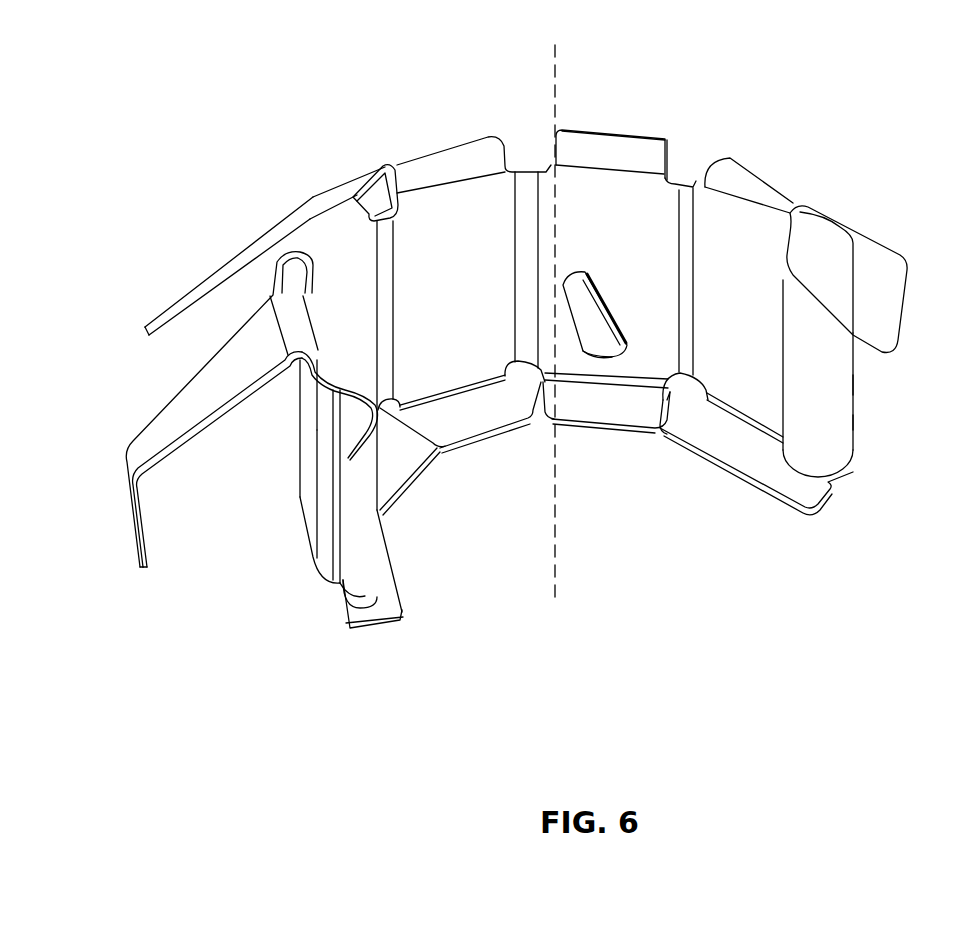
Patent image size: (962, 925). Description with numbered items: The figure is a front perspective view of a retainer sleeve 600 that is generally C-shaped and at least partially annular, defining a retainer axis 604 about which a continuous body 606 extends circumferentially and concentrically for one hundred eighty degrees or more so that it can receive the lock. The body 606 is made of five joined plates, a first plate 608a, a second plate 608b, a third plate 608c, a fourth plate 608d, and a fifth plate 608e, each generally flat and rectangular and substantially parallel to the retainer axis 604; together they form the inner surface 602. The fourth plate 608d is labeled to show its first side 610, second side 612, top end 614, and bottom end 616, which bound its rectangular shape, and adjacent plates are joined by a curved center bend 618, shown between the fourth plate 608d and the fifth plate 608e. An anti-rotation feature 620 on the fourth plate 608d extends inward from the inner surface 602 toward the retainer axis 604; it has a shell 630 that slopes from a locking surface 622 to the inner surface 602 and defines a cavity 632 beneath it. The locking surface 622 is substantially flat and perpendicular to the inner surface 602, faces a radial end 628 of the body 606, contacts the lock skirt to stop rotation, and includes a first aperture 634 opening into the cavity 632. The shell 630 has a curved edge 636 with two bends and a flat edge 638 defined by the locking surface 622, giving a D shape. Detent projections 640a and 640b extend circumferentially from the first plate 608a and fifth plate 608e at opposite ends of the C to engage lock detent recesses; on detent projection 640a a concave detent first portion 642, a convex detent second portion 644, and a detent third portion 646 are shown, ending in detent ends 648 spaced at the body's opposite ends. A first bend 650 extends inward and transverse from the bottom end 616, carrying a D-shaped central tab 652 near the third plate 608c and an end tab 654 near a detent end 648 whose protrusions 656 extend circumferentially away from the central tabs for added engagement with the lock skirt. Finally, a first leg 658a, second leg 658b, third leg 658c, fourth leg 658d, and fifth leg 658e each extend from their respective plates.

The retainer sleeve 600 is at (197, 50).
The inner surface 602 is at (385, 167).
The retainer axis 604 is at (552, 60).
The body 606 is at (750, 370).
The first plate 608a is at (307, 470).
The second plate 608b is at (357, 270).
The third plate 608c is at (437, 220).
The fourth plate 608d is at (587, 187).
The fifth plate 608e is at (763, 240).
The first side 610 is at (540, 273).
The second side 612 is at (680, 275).
The top end 614 is at (625, 173).
The bottom end 616 is at (603, 380).
The center bend 618 is at (680, 200).
The anti-rotation feature 620 is at (586, 332).
The locking surface 622 is at (647, 383).
The radial end 628 is at (853, 422).
The shell 630 is at (580, 298).
The cavity 632 is at (609, 296).
The first aperture 634 is at (617, 323).
The curved edge 636 is at (590, 353).
The flat edge 638 is at (618, 342).
The detent projection 640a is at (370, 567).
The detent projection 640b is at (833, 440).
The detent first portion 642 is at (340, 422).
The detent second portion 644 is at (375, 528).
The detent third portion 646 is at (345, 572).
The detent end 648 is at (855, 383).
The first bend 650 is at (712, 398).
The central tab 652 is at (455, 437).
The end tab 654 is at (713, 440).
The protrusion 656 is at (807, 493).
The first leg 658a is at (158, 412).
The second leg 658b is at (233, 270).
The third leg 658c is at (370, 177).
The fourth leg 658d is at (658, 150).
The fifth leg 658e is at (870, 232).